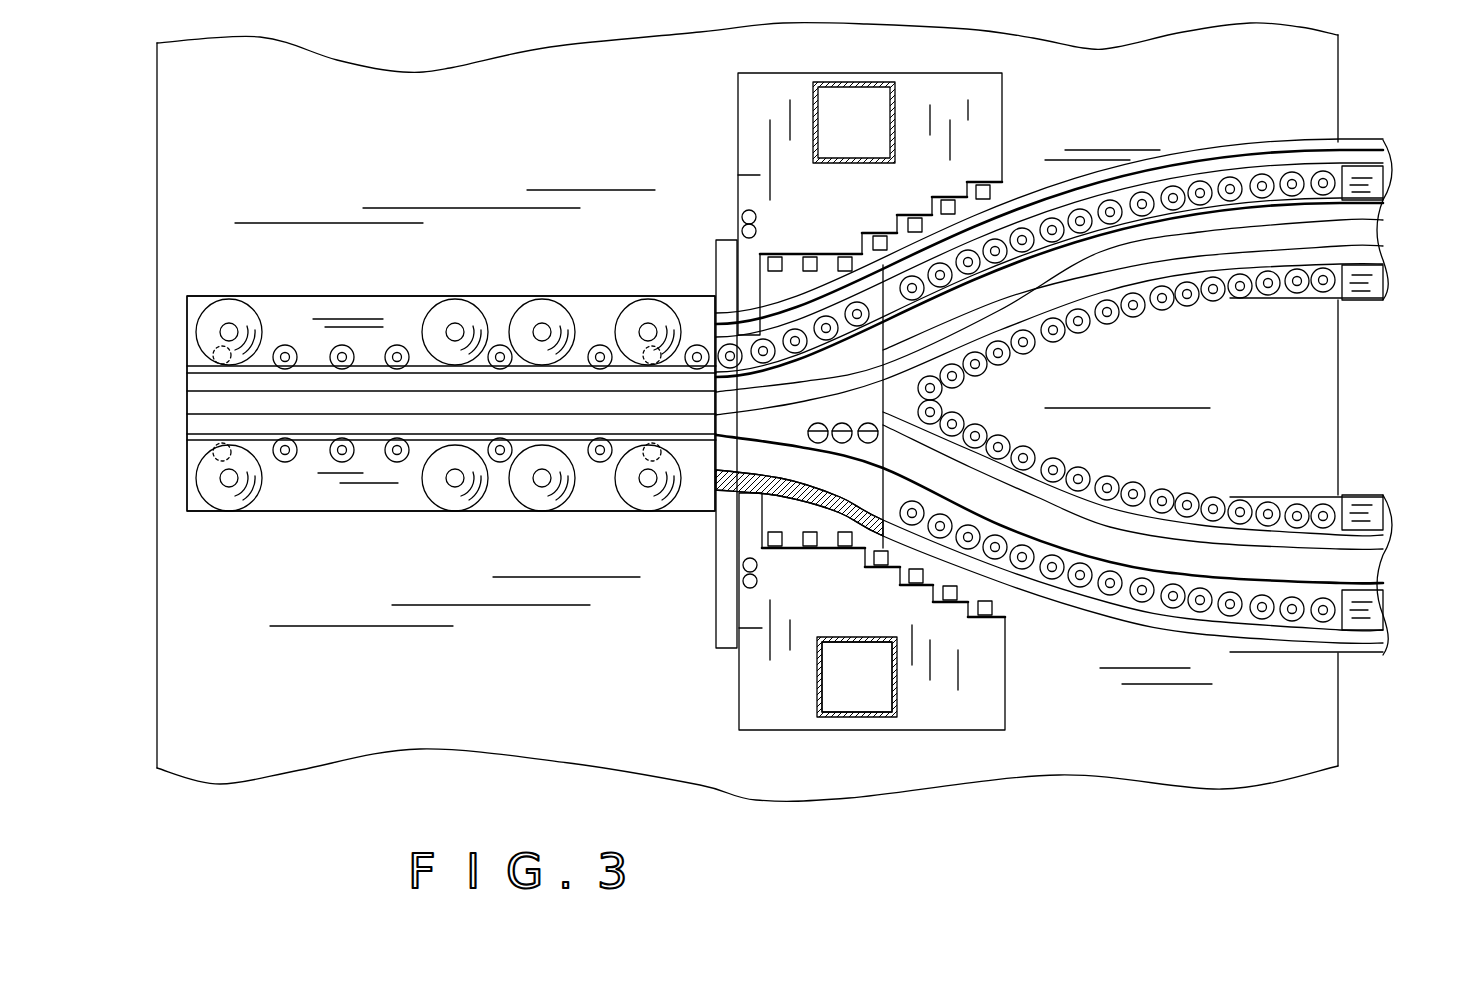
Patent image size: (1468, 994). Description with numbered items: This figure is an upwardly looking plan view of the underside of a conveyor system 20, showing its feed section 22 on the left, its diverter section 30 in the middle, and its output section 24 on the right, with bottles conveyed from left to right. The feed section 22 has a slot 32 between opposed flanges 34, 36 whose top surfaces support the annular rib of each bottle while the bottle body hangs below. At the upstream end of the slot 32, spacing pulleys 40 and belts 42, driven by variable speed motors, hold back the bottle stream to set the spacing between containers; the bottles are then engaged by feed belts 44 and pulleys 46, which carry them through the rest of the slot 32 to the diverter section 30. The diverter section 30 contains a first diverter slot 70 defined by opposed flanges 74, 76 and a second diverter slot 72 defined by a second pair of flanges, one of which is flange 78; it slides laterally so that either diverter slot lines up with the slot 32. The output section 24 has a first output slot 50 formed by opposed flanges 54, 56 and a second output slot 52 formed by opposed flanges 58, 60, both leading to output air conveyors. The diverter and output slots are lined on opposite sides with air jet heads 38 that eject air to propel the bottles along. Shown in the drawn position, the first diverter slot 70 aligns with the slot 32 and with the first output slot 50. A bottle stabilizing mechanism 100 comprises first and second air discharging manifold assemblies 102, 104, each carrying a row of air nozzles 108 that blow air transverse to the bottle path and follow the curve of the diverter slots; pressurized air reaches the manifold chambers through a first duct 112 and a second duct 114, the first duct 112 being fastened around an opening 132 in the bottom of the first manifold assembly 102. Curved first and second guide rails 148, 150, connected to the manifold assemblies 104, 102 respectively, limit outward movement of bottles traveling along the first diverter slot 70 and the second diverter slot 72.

The conveyor system 20 is at (426, 58).
The feed section 22 is at (500, 282).
The output section 24 is at (1160, 126).
The diverter section 30 is at (728, 225).
The slot 32 is at (383, 470).
The flange 34 is at (278, 430).
The flange 36 is at (290, 387).
The air jet heads 38 is at (285, 345).
The spacing pulleys 40 is at (215, 322).
The belts 42 is at (372, 297).
The feed belts 44 is at (600, 300).
The pulleys 46 is at (548, 318).
The first output slot 50 is at (1345, 237).
The second output slot 52 is at (1352, 565).
The flange 54 is at (1365, 207).
The flange 56 is at (1365, 257).
The flange 58 is at (1377, 542).
The flange 60 is at (1377, 587).
The first diverter slot 70 is at (1000, 353).
The second diverter slot 72 is at (733, 490).
The flange 74 is at (975, 372).
The flange 76 is at (1050, 336).
The flange 78 is at (722, 470).
The bottle stabilizing mechanism 100 is at (720, 705).
The first air discharging manifold assembly 102 is at (902, 734).
The second air discharging manifold assembly 104 is at (900, 70).
The air nozzles 108 is at (983, 183).
The first duct 112 is at (897, 685).
The second duct 114 is at (895, 100).
The opening 132 is at (832, 688).
The first guide rail 148 is at (1355, 140).
The second guide rail 150 is at (1368, 657).